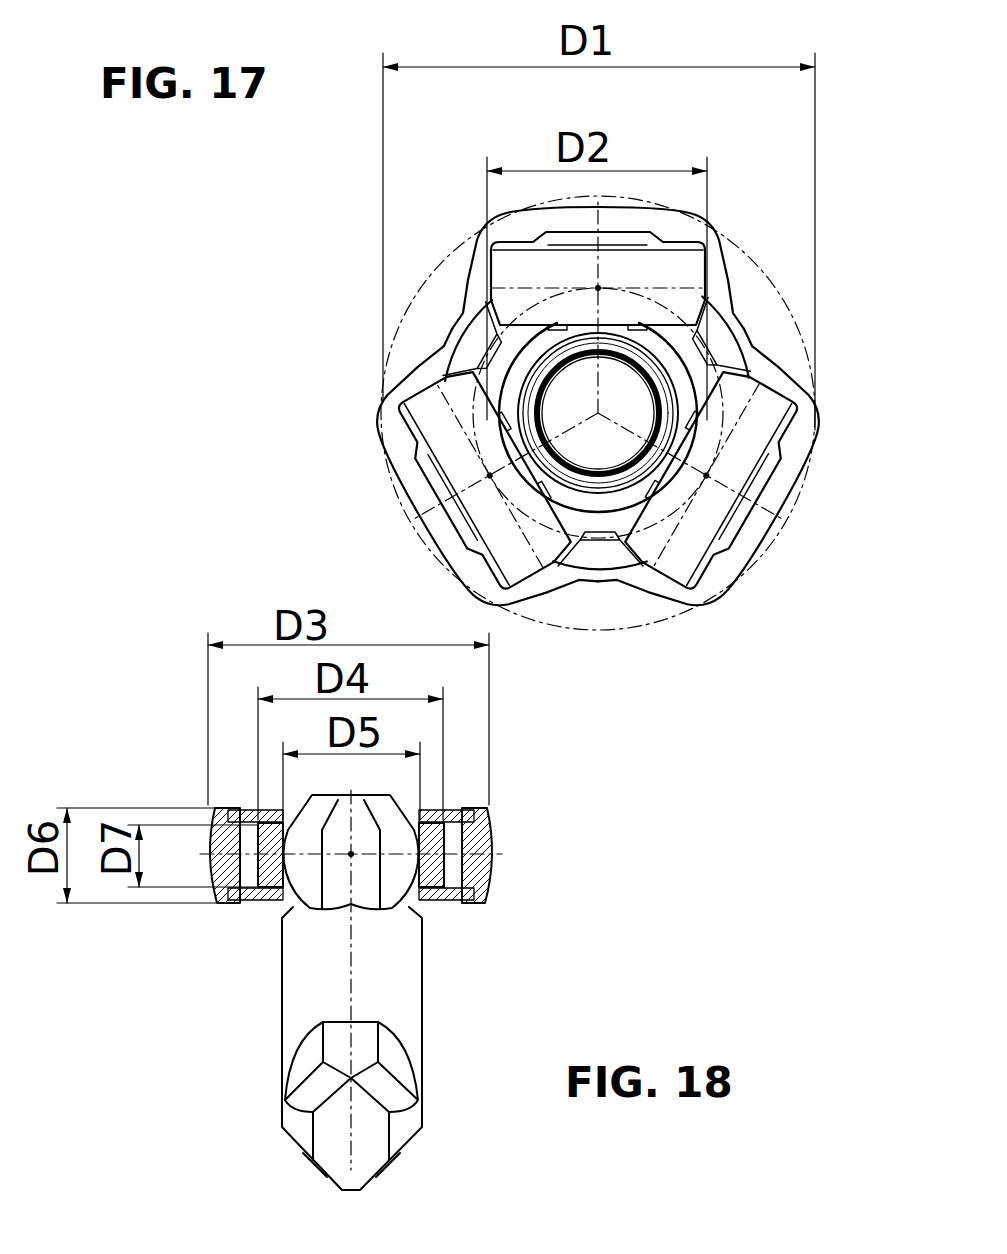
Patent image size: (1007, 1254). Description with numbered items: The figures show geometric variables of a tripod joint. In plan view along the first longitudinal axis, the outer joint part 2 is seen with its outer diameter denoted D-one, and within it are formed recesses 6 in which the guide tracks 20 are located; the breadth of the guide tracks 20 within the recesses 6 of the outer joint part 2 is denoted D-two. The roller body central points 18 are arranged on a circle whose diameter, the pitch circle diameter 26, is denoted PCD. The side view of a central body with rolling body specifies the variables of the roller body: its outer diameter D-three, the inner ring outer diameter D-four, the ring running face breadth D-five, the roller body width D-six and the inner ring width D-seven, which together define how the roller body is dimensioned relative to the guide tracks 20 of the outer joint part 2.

In FIG. 17, the outer joint part 2 is at (596, 588).
In FIG. 17, the recesses 6 is at (763, 488).
In FIG. 17, the roller body central points 18 is at (706, 476).
In FIG. 18, the roller body central points 18 is at (351, 854).
In FIG. 17, the guide tracks 20 is at (752, 430).
In FIG. 17, the pitch circle diameter 26 is at (475, 108).